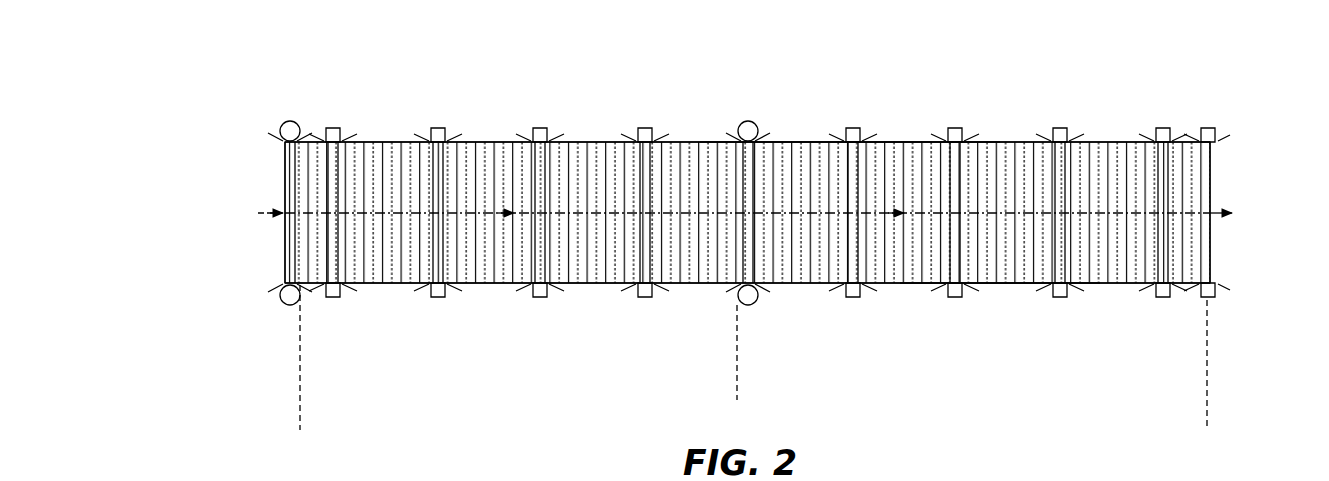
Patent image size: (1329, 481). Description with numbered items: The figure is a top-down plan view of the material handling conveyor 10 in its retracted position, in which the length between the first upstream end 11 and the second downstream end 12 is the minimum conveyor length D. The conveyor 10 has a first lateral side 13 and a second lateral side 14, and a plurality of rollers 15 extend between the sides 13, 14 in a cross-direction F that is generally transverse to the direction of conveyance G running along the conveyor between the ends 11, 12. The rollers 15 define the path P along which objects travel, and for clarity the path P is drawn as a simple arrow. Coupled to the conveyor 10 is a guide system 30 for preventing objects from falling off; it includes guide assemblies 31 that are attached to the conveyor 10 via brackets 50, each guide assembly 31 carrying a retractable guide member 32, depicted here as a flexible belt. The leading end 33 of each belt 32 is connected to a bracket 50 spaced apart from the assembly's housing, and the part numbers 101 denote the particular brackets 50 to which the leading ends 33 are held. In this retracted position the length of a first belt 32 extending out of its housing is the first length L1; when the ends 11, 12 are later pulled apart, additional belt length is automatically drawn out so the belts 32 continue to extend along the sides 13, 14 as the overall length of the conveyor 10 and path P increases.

The material handling conveyor 10 is at (1235, 58).
The first upstream end 11 is at (255, 170).
The second downstream end 12 is at (1243, 175).
The first lateral side 13 is at (1021, 297).
The second lateral side 14 is at (998, 120).
The rollers 15 is at (513, 178).
The guide system 30 is at (1098, 120).
The guide assembly 31 is at (293, 122).
The retractable guide member 32 is at (378, 142).
The leading end 33 is at (1212, 128).
The bracket 50 is at (548, 140).
The brackets to which leading ends are held 101 is at (731, 125).
The path P is at (581, 222).
The cross-direction F is at (830, 30).
The direction of conveyance G is at (924, 75).
The first length L1 is at (729, 387).
The minimum conveyor length D is at (308, 417).